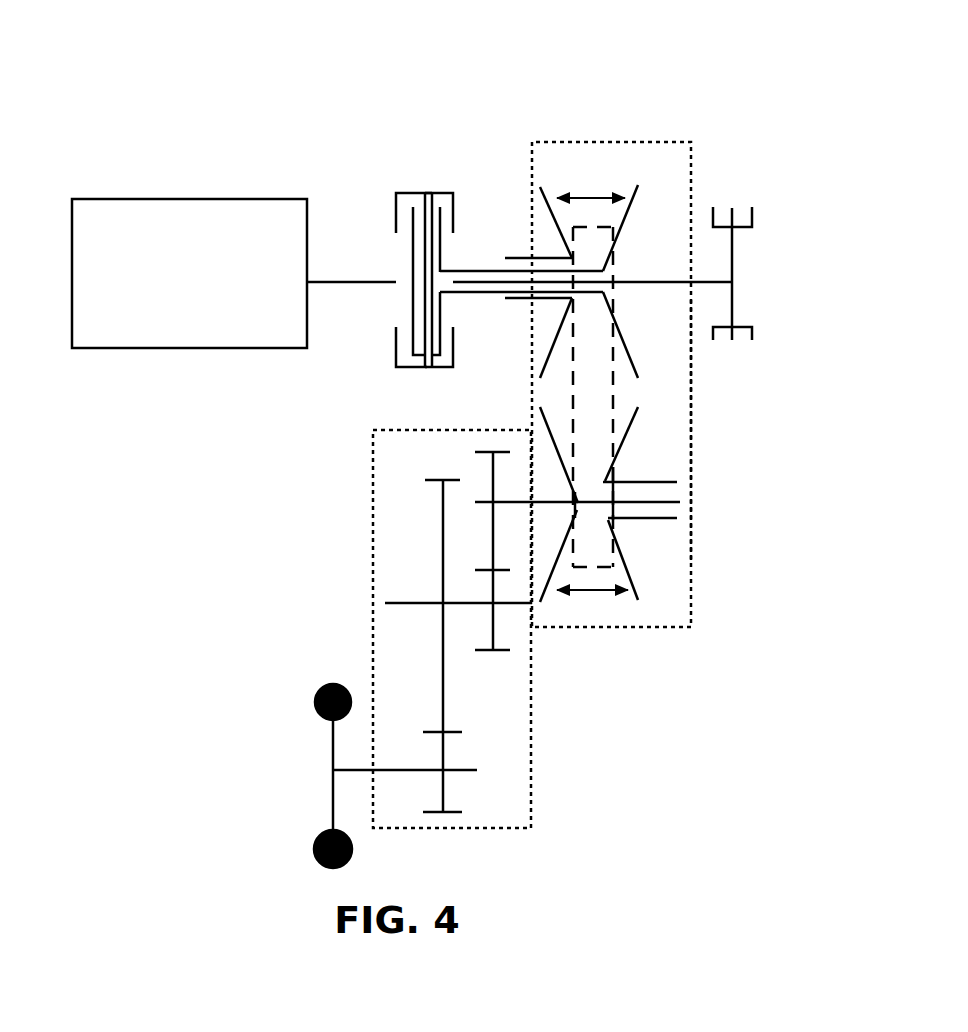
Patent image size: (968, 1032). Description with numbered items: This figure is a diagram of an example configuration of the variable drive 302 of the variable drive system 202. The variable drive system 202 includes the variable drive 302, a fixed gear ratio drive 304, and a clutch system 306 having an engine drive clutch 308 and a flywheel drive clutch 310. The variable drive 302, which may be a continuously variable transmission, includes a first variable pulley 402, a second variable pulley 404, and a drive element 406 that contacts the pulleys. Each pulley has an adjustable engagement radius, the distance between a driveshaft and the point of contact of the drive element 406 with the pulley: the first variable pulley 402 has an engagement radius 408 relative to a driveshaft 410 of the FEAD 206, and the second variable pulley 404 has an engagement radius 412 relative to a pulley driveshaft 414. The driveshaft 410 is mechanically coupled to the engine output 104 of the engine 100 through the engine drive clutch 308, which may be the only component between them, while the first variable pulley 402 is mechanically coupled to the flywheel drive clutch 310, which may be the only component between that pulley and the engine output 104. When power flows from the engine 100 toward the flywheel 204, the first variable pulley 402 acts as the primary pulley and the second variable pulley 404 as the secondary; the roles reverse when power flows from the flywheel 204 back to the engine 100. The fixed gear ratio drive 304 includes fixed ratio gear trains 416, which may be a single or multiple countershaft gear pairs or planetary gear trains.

The engine 100 is at (170, 285).
The engine output 104 is at (337, 282).
The variable drive system 202 is at (868, 135).
The flywheel 204 is at (328, 736).
The FEAD 206 is at (733, 250).
The variable drive 302 is at (690, 428).
The fixed gear ratio drive 304 is at (372, 514).
The clutch system 306 is at (375, 380).
The engine drive clutch 308 is at (398, 192).
The flywheel drive clutch 310 is at (447, 192).
The first variable pulley 402 is at (657, 183).
The second variable pulley 404 is at (660, 622).
The drive element 406 is at (607, 400).
The engagement radius 408 is at (622, 258).
The driveshaft 410 is at (486, 282).
The engagement radius 412 is at (618, 510).
The pulley driveshaft 414 is at (670, 503).
The fixed ratio gear trains 416 is at (415, 558).